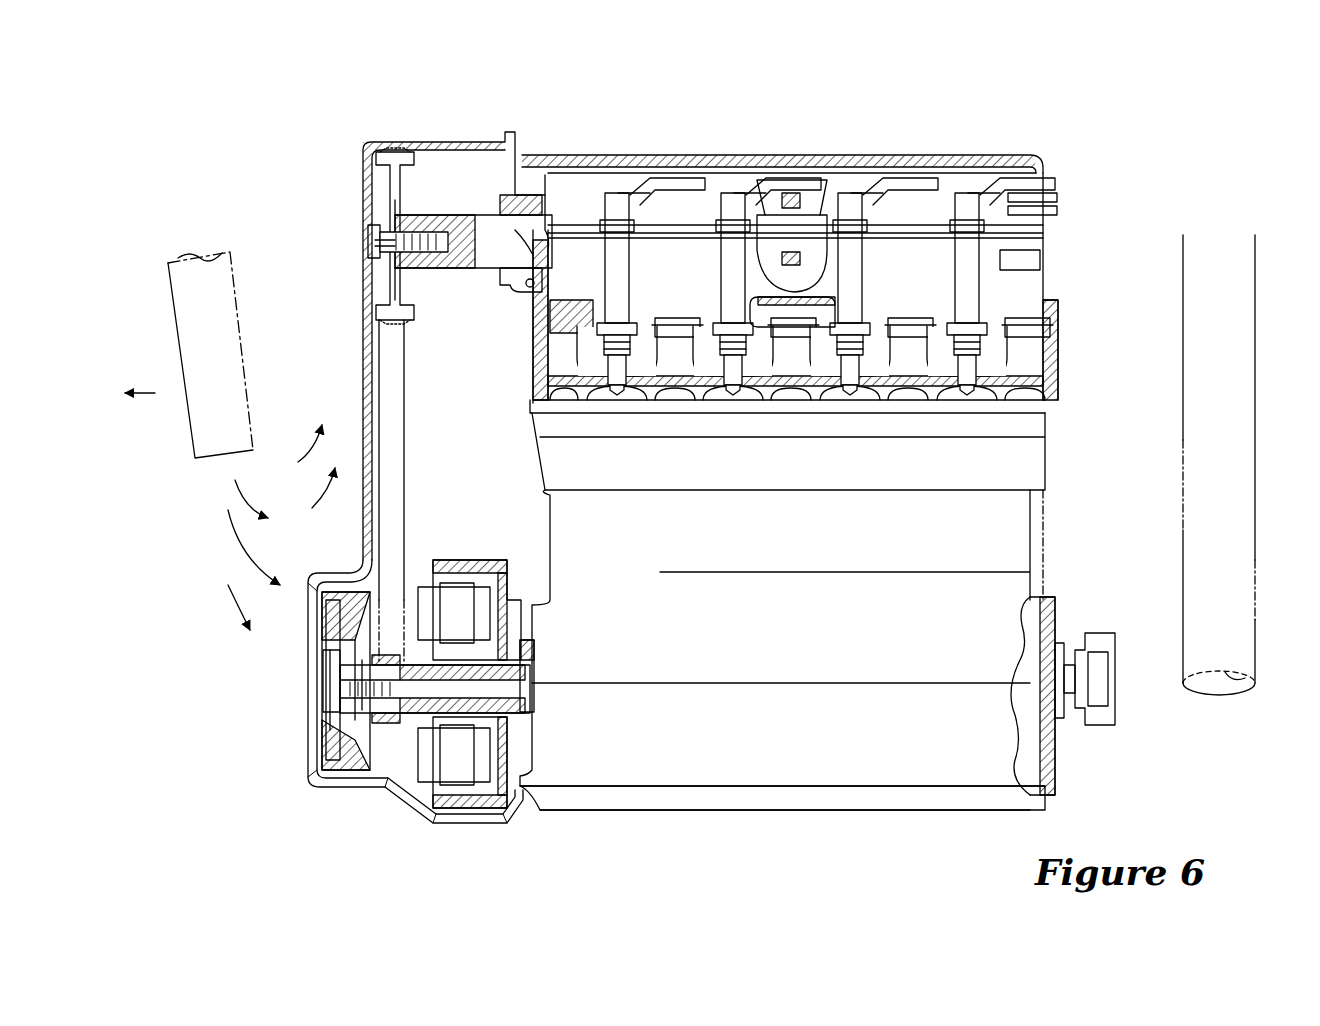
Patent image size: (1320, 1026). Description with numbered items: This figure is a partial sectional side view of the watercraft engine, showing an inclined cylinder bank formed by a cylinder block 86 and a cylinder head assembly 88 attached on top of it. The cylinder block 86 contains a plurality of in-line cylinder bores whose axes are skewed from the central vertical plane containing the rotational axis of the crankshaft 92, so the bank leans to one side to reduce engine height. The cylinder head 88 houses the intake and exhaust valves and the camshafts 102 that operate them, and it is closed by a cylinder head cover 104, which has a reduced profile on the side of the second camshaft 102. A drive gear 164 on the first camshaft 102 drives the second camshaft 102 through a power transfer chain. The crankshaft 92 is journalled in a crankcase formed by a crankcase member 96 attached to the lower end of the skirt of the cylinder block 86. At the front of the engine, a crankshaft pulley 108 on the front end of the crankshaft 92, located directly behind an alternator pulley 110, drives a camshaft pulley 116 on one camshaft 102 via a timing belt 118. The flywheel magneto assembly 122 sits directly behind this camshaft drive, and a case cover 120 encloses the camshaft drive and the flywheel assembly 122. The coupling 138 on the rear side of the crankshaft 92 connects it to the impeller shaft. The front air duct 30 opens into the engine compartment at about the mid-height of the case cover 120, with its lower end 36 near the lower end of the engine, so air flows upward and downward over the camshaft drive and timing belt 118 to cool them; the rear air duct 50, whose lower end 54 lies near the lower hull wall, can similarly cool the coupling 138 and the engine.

The air duct 30 is at (245, 285).
The lower end 36 is at (195, 462).
The rear air duct 50 is at (1258, 480).
The lower end 54 is at (1255, 683).
The cylinder block 86 is at (1045, 455).
The cylinder head assembly 88 is at (1060, 375).
The crankshaft 92 is at (528, 655).
The crankcase member 96 is at (790, 776).
The camshaft 102 is at (487, 215).
The cylinder head cover 104 is at (957, 155).
The crankshaft pulley 108 is at (398, 712).
The alternator pulley 110 is at (320, 742).
The camshaft pulley 116 is at (378, 190).
The timing belt 118 is at (410, 405).
The case cover 120 is at (362, 380).
The flywheel magneto assembly 122 is at (462, 558).
The coupling 138 is at (1105, 632).
The drive gear 164 is at (790, 195).